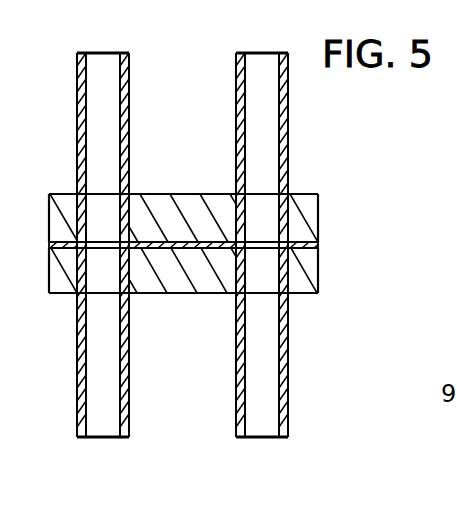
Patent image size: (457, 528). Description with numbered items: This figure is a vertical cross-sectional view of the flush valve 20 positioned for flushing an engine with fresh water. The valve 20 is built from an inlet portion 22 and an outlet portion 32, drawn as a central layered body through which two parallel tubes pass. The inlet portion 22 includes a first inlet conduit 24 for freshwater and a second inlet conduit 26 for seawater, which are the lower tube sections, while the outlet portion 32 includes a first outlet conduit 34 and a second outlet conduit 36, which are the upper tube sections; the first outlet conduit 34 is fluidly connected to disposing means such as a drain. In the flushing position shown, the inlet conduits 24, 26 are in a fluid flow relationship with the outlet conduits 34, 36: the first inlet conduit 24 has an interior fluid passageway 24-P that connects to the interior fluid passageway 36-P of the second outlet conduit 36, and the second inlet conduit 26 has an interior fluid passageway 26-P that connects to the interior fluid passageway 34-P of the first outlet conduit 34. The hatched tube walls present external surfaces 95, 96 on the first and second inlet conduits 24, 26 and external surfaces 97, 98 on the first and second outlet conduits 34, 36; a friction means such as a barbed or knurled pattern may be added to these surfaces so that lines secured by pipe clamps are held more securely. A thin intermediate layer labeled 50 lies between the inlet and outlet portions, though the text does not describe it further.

The flush valve 20 is at (331, 172).
The inlet portion 22 is at (318, 293).
The outlet portion 32 is at (318, 195).
The intermediate bonding layer 50 is at (318, 245).
The first outlet conduit 34 is at (288, 78).
The second outlet conduit 36 is at (129, 74).
The first inlet conduit 24 is at (129, 420).
The second inlet conduit 26 is at (288, 420).
The interior fluid passageway of first outlet conduit 34-P is at (258, 63).
The interior fluid passageway of second outlet conduit 36-P is at (100, 63).
The interior fluid passageway of first inlet conduit 24-P is at (102, 430).
The interior fluid passageway of second inlet conduit 26-P is at (262, 430).
The external surface of first outlet conduit 97 is at (288, 110).
The external surface of second outlet conduit 98 is at (129, 122).
The external surface of first inlet conduit 95 is at (77, 366).
The external surface of second inlet conduit 96 is at (236, 345).